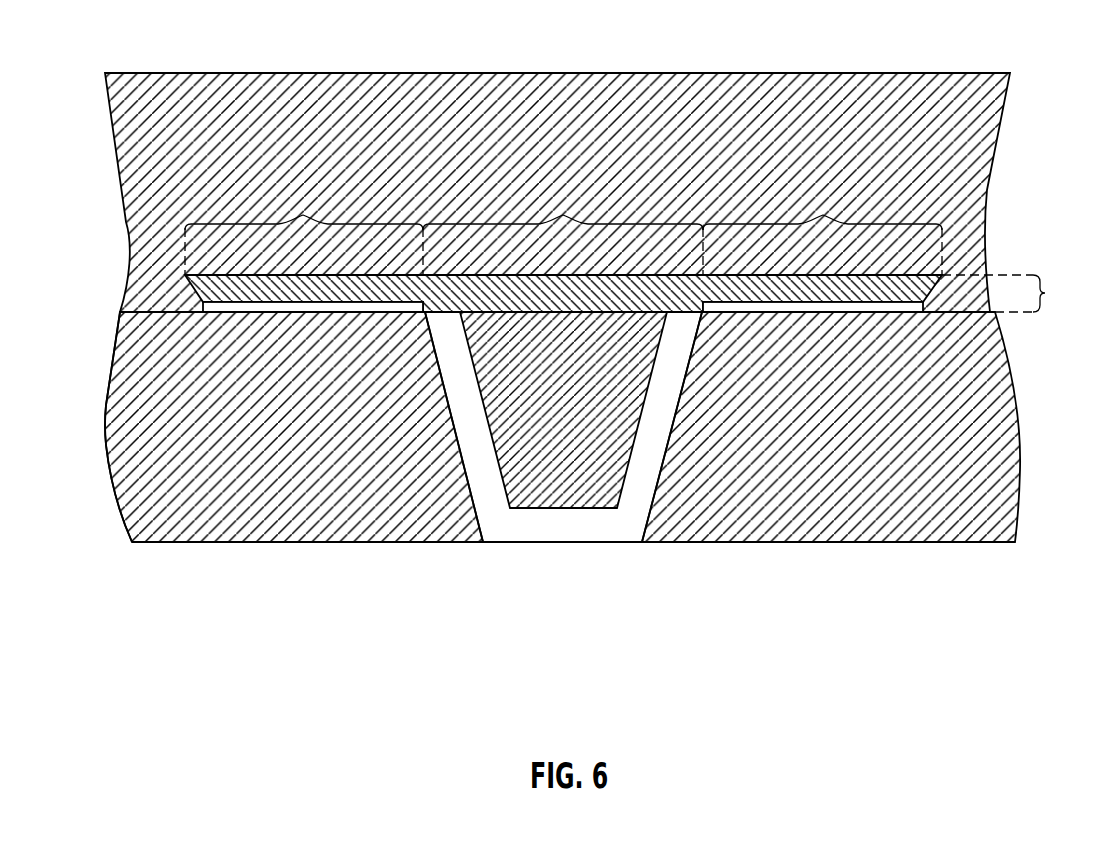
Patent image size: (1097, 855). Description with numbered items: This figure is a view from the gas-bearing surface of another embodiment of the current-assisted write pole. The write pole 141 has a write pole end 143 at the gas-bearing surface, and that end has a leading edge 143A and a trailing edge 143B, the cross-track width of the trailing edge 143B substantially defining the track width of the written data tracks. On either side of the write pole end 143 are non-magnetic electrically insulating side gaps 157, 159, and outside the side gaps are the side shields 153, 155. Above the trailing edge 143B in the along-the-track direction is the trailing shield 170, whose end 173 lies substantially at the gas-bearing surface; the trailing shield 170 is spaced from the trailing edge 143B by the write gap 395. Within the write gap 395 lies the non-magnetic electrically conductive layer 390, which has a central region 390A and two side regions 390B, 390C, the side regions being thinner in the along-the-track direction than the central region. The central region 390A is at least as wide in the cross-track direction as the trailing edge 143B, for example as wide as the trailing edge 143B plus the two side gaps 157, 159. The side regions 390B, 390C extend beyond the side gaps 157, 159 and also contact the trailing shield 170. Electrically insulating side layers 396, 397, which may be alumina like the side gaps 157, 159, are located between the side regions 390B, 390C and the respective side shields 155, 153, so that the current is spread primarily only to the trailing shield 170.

The trailing shield 170 is at (803, 73).
The end of trailing shield 173 is at (972, 133).
The side shield 153 is at (997, 437).
The side shield 155 is at (145, 467).
The conductive layer 390 is at (753, 285).
The central region of conductive layer 390A is at (563, 228).
The side region of conductive layer 390B is at (304, 228).
The side region of conductive layer 390C is at (822, 228).
The write gap 395 is at (1015, 293).
The insulating side layer 396 is at (280, 307).
The insulating side layer 397 is at (850, 307).
The write pole 141 is at (475, 373).
The write pole end 143 is at (567, 478).
The leading edge of write pole end 143A is at (537, 510).
The trailing edge of write pole end 143B is at (590, 318).
The side gap 157 is at (655, 442).
The side gap 159 is at (472, 453).